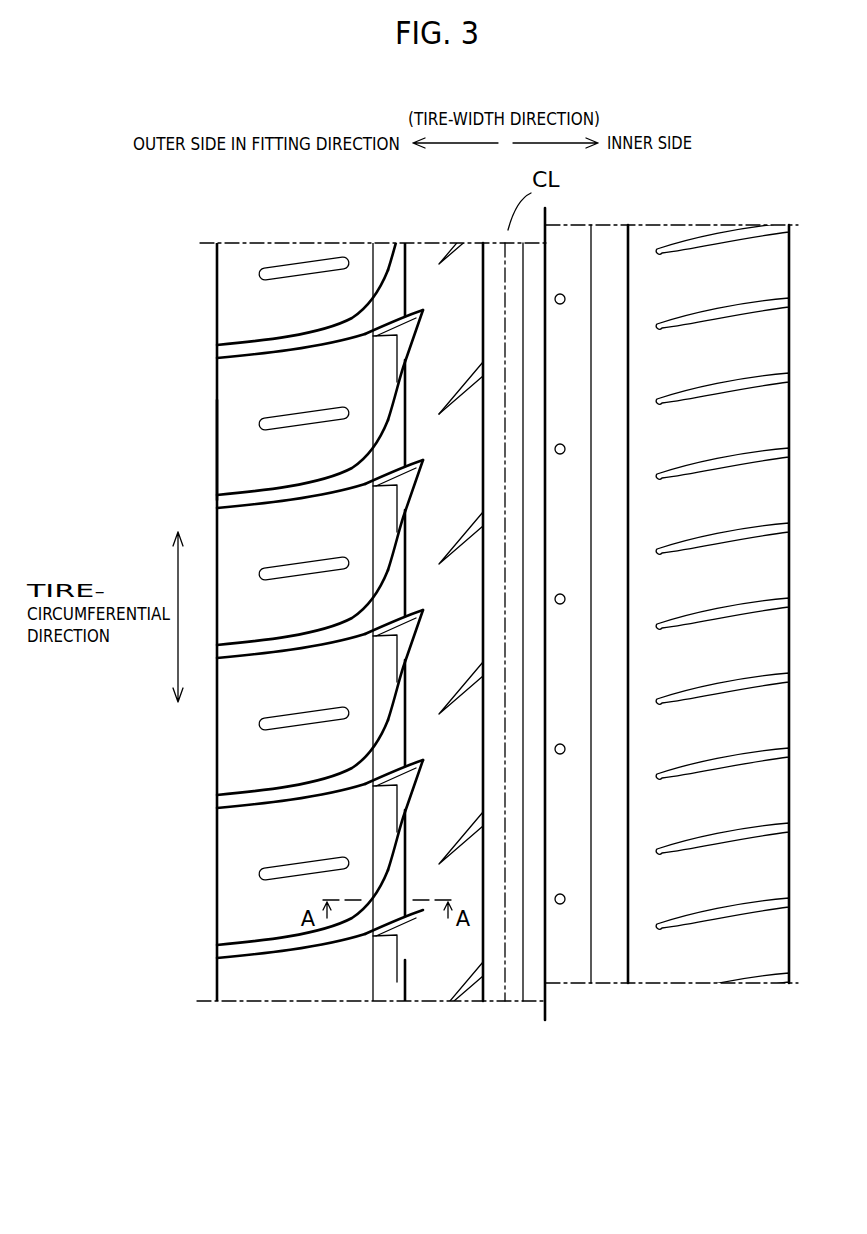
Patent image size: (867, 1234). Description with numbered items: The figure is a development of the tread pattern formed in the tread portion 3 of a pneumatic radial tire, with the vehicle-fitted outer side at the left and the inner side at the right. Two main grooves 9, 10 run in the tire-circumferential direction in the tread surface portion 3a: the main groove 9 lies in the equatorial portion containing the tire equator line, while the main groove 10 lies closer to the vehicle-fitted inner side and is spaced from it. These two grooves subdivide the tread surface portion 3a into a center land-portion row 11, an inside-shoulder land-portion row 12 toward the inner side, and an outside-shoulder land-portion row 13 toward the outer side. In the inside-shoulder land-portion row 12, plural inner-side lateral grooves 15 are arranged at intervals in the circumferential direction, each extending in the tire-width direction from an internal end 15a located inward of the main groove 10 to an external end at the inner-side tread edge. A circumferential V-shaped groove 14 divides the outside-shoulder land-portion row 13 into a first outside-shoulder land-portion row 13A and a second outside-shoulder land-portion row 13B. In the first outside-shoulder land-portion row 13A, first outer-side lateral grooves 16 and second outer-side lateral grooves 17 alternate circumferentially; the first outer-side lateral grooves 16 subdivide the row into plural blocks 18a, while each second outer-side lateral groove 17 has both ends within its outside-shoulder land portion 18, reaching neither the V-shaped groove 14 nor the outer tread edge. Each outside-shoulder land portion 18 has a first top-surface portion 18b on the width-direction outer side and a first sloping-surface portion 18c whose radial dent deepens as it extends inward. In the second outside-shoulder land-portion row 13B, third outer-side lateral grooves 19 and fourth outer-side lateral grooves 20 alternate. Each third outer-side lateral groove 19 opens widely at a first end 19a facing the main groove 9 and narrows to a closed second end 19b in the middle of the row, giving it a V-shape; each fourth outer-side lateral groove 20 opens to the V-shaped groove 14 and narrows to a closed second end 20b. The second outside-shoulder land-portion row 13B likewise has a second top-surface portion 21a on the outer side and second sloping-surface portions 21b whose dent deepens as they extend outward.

The tread portion 3 is at (231, 233).
The tread surface portion 3a is at (293, 255).
The main groove 9 is at (483, 1002).
The main groove 10 is at (591, 962).
The center land-portion row 11 is at (523, 1015).
The inside-shoulder land-portion row 12 is at (672, 628).
The outside-shoulder land-portion row 13 is at (262, 1055).
The first outside-shoulder land-portion row 13A is at (370, 1010).
The second outside-shoulder land-portion row 13B is at (483, 1010).
The V-shaped groove 14 is at (395, 910).
The inner-side lateral groove 15 is at (720, 310).
The internal end 15a is at (672, 318).
The first outer-side lateral groove 16 is at (228, 352).
The second outer-side lateral groove 17 is at (300, 427).
The outside-shoulder land portion 18 is at (204, 402).
The block 18a is at (222, 450).
The first top-surface portion 18b is at (292, 356).
The first sloping-surface portion 18c is at (380, 372).
The third outer-side lateral groove 19 is at (463, 390).
The first end 19a is at (475, 367).
The second end 19b is at (440, 410).
The fourth outer-side lateral groove 20 is at (410, 487).
The second end 20b is at (358, 492).
The second top-surface portion 21a is at (428, 255).
The second sloping-surface portion 21b is at (390, 270).